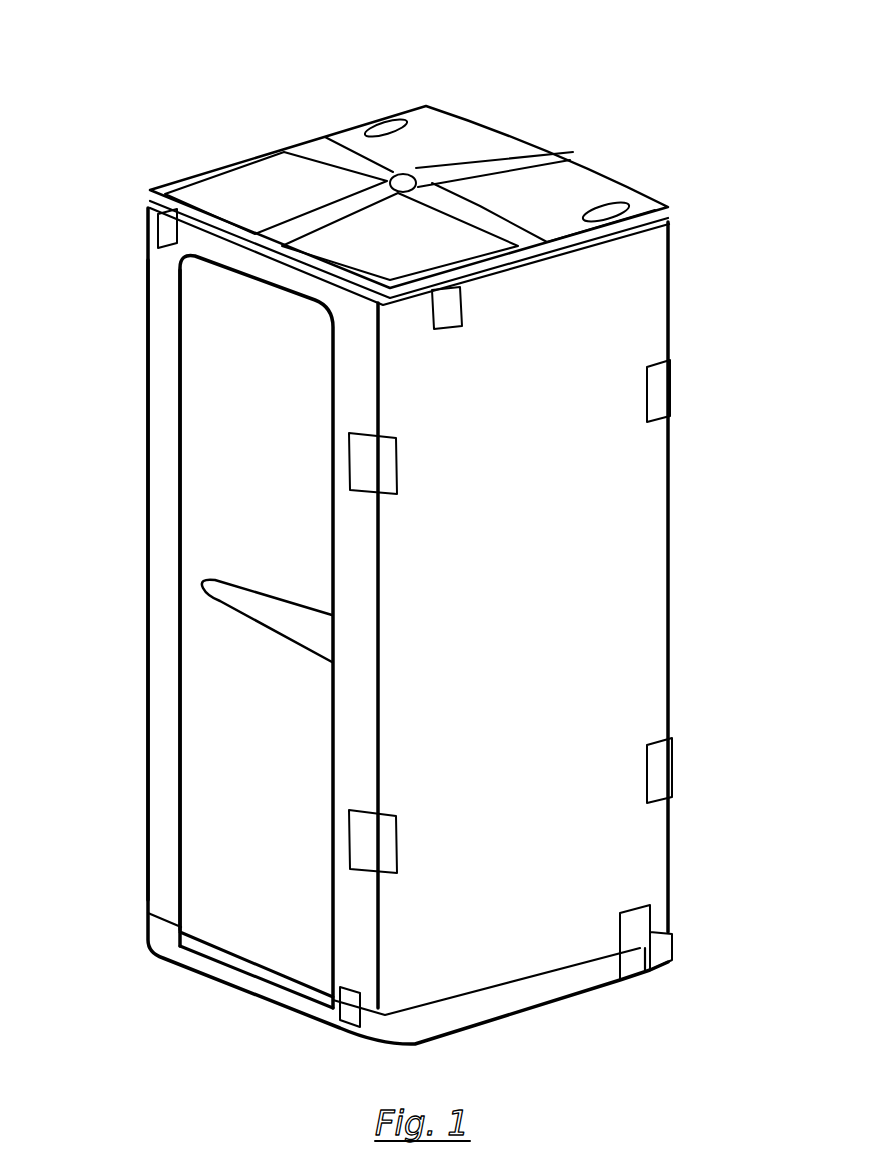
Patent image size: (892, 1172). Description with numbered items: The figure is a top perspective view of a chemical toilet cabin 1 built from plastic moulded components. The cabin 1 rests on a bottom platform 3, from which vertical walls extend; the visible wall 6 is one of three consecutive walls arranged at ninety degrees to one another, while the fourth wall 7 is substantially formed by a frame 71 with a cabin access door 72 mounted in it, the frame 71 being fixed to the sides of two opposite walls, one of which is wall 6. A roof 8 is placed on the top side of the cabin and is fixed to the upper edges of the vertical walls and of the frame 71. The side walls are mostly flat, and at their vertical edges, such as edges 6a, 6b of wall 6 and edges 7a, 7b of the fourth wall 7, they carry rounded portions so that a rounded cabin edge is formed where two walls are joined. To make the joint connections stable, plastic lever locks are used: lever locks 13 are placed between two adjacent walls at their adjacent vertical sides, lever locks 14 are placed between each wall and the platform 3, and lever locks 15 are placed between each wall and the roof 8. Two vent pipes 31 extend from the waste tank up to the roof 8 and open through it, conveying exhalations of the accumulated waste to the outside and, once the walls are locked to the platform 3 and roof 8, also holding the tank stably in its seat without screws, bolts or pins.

The chemical toilet cabin 1 is at (712, 533).
The bottom platform 3 is at (540, 995).
The vertical wall 6 is at (590, 658).
The vertical edge of wall 6a is at (388, 666).
The vertical edge of wall 6b is at (660, 600).
The fourth wall 7 is at (224, 632).
The vertical edge of fourth wall 7a is at (165, 655).
The vertical edge of fourth wall 7b is at (360, 710).
The roof 8 is at (565, 183).
The lever locks 13 is at (385, 468).
The lever locks 14 is at (640, 927).
The lever locks 15 is at (167, 231).
The vent pipes 31 is at (385, 130).
The frame 71 is at (165, 402).
The cabin access door 72 is at (210, 452).